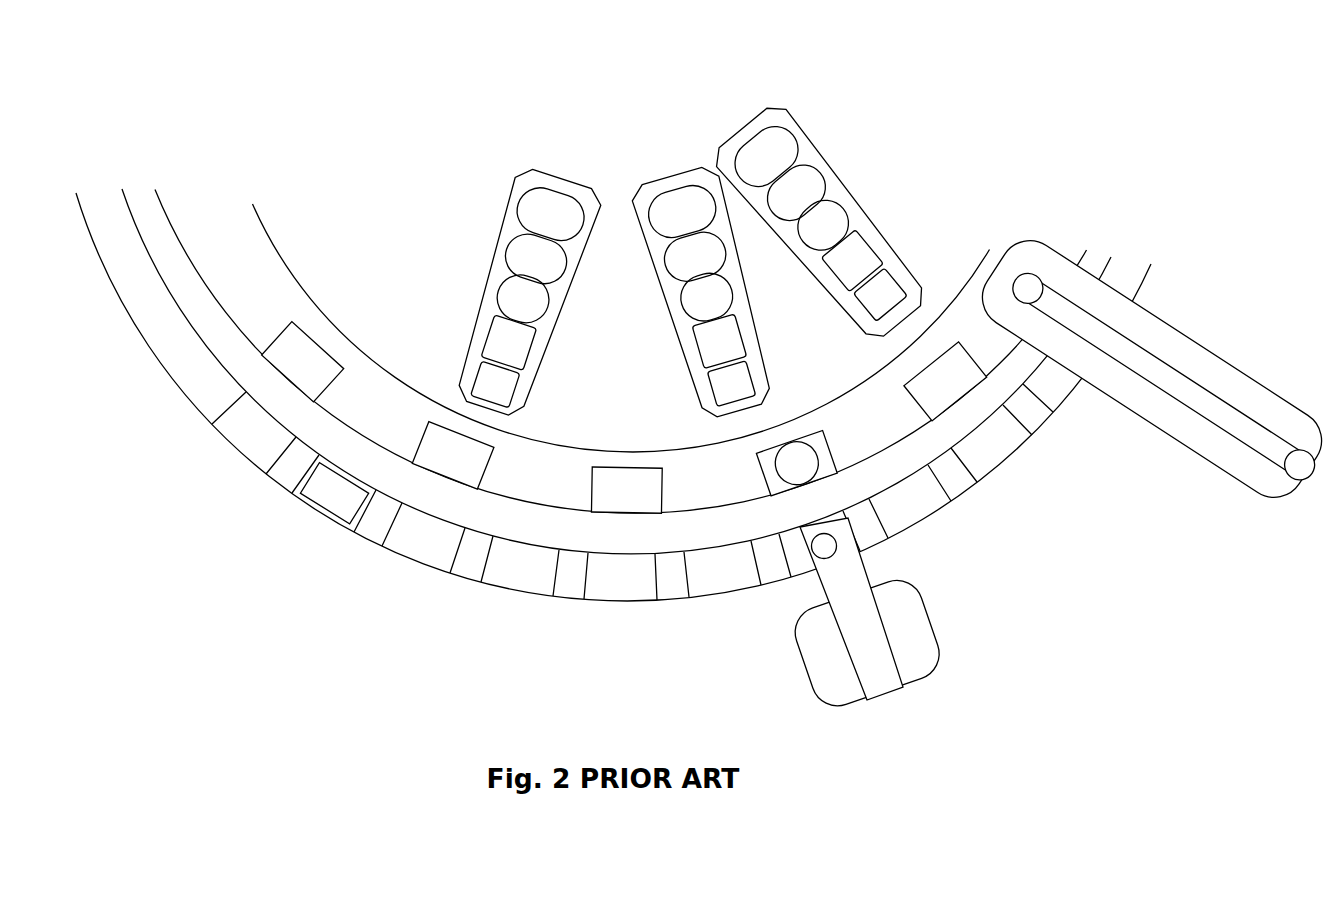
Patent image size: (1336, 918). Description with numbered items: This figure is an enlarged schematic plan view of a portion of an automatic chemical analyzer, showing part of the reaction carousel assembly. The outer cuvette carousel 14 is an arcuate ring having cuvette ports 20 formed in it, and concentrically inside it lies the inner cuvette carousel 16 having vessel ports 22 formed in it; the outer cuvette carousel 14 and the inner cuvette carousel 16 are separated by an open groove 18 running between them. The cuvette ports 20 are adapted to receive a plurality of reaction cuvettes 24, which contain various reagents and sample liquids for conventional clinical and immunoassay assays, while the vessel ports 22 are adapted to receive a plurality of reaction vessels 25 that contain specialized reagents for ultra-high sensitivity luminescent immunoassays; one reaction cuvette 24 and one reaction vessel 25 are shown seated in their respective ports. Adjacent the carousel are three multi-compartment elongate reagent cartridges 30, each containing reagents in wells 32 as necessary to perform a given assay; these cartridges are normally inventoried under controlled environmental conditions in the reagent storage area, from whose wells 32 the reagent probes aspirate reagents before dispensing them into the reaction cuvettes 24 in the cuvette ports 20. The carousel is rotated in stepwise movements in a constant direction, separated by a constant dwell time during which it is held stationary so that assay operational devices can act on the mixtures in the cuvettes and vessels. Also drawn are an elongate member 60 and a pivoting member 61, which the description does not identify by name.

The outer cuvette carousel 14 is at (1050, 400).
The inner cuvette carousel 16 is at (403, 400).
The open groove 18 is at (975, 403).
The cuvette ports 20 is at (227, 447).
The vessel ports 22 is at (624, 521).
The reaction cuvettes 24 is at (313, 507).
The reaction vessels 25 is at (788, 478).
The reagent cartridges 30 is at (691, 240).
The wells 32 is at (823, 222).
The handle 60 is at (1232, 485).
The actuator body 61 is at (945, 670).